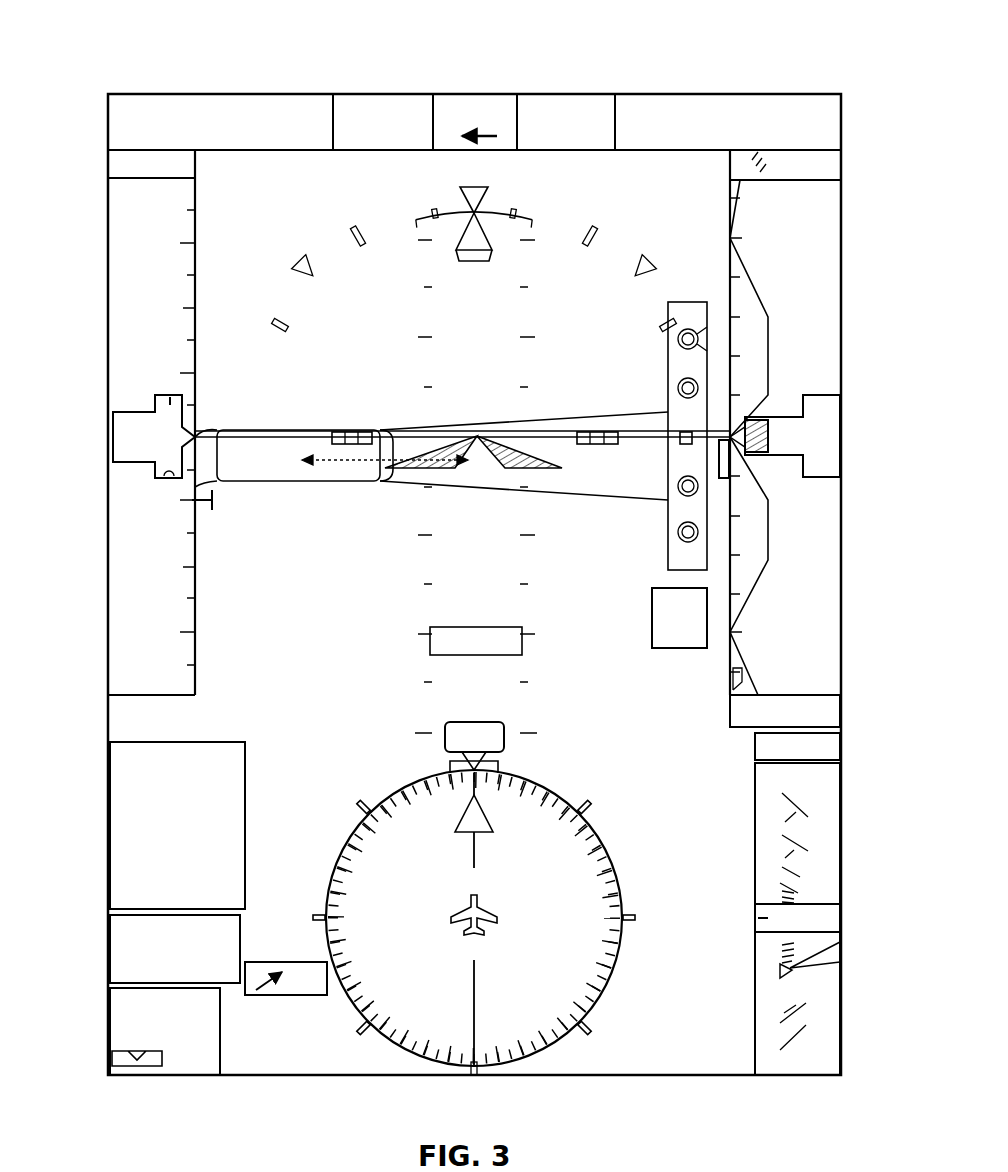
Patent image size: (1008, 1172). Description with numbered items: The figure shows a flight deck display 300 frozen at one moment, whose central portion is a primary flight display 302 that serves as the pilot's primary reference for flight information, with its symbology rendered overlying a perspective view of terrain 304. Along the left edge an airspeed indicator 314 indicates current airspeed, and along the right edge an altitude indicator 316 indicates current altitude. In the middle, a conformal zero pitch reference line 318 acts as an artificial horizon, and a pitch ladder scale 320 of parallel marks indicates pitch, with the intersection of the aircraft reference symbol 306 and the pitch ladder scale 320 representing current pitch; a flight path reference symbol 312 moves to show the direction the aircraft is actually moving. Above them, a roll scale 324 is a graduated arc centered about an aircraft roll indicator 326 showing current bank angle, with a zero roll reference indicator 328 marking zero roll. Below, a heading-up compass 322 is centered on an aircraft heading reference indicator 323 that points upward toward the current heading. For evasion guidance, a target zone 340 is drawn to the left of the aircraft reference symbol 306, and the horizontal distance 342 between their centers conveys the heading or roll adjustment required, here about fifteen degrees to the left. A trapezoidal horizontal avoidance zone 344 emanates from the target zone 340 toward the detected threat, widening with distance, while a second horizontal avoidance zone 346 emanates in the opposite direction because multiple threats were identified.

The flight deck display 300 is at (792, 40).
The primary flight display 302 is at (230, 168).
The terrain 304 is at (689, 802).
The aircraft reference symbol 306 is at (430, 433).
The flight path reference symbol 312 is at (350, 430).
The airspeed indicator 314 is at (104, 438).
The altitude indicator 316 is at (845, 424).
The zero pitch reference line 318 is at (667, 398).
The pitch ladder scale 320 is at (393, 582).
The compass 322 is at (370, 1036).
The aircraft heading reference indicator 323 is at (490, 930).
The roll scale 324 is at (340, 236).
The aircraft roll indicator 326 is at (466, 262).
The zero roll reference indicator 328 is at (480, 186).
The target zone 340 is at (260, 428).
The horizontal distance 342 is at (340, 470).
The horizontal avoidance zone 344 is at (568, 412).
The second horizontal avoidance zone 346 is at (205, 428).